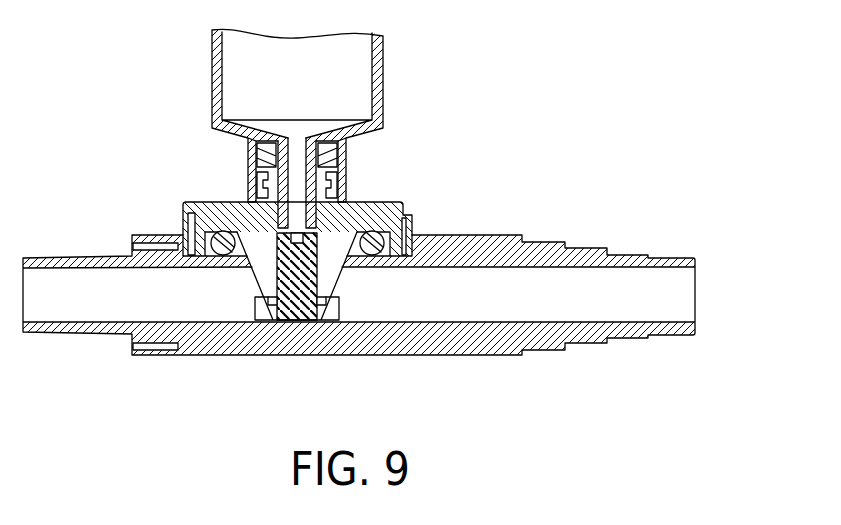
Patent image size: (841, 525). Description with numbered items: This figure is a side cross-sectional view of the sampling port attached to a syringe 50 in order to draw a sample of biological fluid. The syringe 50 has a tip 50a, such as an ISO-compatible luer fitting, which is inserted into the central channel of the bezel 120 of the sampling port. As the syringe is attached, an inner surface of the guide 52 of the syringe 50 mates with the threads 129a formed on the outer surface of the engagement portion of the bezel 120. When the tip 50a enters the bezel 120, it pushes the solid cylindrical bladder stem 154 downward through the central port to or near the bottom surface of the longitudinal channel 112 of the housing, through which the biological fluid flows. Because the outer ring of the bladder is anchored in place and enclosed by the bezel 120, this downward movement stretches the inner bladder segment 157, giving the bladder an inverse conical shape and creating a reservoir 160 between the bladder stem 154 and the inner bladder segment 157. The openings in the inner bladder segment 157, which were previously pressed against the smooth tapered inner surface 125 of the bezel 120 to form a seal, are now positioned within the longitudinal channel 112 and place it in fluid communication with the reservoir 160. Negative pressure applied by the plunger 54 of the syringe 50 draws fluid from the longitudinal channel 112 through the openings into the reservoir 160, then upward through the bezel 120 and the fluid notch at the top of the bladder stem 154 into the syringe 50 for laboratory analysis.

The syringe 50 is at (289, 128).
The plunger 54 is at (238, 58).
The guide 52 is at (256, 162).
The threads 129a is at (256, 188).
The tip 50a is at (314, 163).
The bezel 120 is at (401, 198).
The longitudinal channel 112 is at (683, 293).
The smooth tapered inner surface 125 is at (253, 248).
The inner bladder segment 157 is at (270, 300).
The bladder stem 154 is at (296, 310).
The reservoir 160 is at (333, 273).